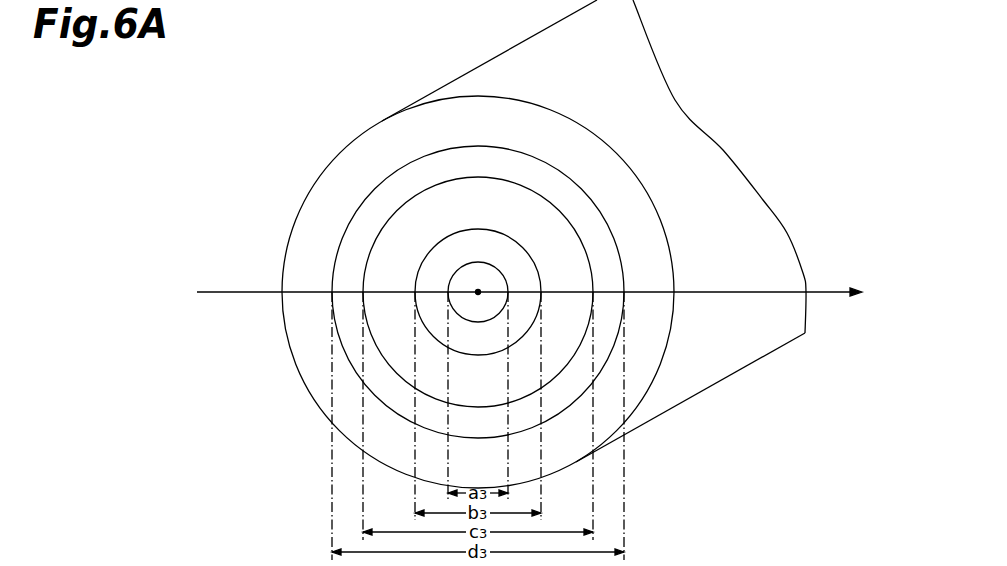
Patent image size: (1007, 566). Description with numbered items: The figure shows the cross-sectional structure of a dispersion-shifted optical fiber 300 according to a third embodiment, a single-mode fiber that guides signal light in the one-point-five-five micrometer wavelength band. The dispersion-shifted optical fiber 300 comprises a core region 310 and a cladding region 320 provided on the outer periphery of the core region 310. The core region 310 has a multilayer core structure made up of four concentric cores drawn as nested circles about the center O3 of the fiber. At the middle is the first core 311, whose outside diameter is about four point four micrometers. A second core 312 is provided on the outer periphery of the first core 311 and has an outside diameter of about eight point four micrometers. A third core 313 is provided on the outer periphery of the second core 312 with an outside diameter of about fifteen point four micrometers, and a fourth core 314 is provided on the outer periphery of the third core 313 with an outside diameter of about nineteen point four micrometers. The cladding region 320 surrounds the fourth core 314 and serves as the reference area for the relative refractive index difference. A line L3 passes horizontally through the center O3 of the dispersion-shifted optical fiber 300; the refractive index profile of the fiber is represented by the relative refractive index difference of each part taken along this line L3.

The dispersion-shifted optical fiber 300 is at (752, 245).
The core region 310 is at (227, 132).
The first core 311 is at (467, 282).
The second core 312 is at (453, 255).
The third core 313 is at (428, 227).
The fourth core 314 is at (415, 188).
The cladding region 320 is at (596, 481).
The center O3 is at (478, 292).
The line L3 is at (544, 293).